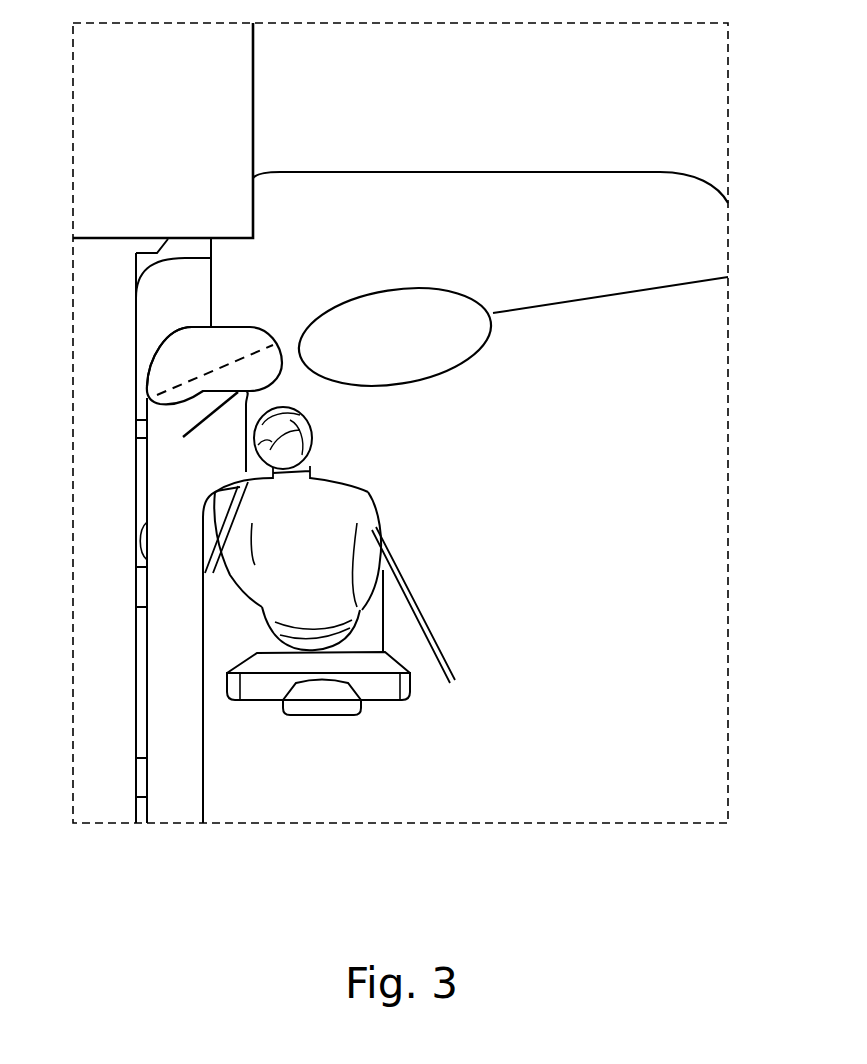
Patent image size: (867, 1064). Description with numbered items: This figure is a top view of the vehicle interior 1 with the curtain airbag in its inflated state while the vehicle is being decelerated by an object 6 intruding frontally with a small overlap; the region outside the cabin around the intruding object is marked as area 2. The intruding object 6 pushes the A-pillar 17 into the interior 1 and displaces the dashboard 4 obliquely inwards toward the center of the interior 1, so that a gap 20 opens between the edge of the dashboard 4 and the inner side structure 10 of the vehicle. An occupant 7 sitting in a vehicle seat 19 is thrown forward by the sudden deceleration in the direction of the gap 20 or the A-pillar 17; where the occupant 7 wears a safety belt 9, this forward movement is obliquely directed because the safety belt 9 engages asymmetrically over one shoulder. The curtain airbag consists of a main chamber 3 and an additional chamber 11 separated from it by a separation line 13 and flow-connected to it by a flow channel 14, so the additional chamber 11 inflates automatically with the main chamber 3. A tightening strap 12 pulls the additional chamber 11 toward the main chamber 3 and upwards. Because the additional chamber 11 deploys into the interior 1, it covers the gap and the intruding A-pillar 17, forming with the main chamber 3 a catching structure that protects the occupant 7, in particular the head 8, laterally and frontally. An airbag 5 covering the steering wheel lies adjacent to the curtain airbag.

The interior 1 is at (577, 530).
The upper cabin region 2 is at (411, 81).
The main chamber 3 is at (162, 695).
The dashboard 4 is at (525, 190).
The airbag 5 is at (363, 320).
The object 6 is at (240, 78).
The occupant 7 is at (352, 507).
The head 8 is at (305, 430).
The safety belt 9 is at (220, 572).
The inner side structure 10 is at (130, 647).
The additional chamber 11 is at (227, 343).
The tightening strap 12 is at (188, 381).
The separation line 13 is at (155, 398).
The flow channel 14 is at (195, 417).
The A-pillar 17 is at (188, 247).
The vehicle seat 19 is at (375, 690).
The gap 20 is at (193, 294).